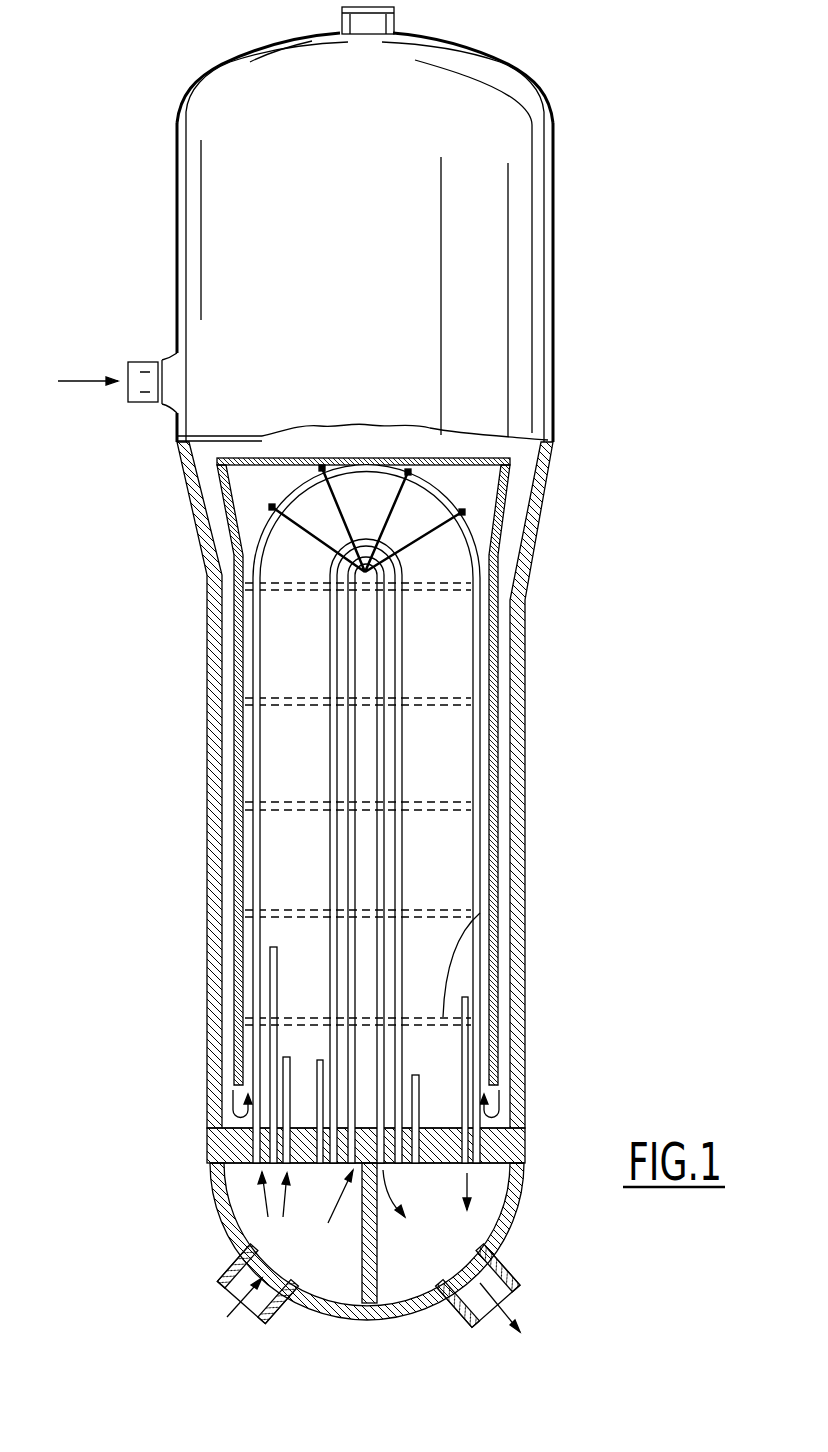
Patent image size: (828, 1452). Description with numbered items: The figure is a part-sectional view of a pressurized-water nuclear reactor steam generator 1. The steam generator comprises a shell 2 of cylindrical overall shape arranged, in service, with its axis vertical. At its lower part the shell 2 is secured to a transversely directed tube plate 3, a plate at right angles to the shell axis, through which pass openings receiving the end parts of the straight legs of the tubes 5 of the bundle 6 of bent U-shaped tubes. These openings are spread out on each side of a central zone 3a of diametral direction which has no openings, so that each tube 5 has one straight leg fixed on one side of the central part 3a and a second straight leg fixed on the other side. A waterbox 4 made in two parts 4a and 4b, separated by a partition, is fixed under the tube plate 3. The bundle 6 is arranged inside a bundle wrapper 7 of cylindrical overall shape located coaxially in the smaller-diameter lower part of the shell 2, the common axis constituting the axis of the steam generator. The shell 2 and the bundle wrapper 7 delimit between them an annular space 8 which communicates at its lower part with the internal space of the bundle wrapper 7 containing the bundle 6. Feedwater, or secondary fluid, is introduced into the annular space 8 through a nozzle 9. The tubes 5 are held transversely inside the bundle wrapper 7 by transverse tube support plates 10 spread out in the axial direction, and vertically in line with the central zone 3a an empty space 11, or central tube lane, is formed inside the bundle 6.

The steam generator 1 is at (349, 669).
The shell 2 is at (208, 722).
The tube plate 3 is at (512, 1148).
The central zone of the tube plate 3a is at (363, 1130).
The waterbox 4 is at (230, 1240).
The first part of the waterbox 4a is at (342, 1244).
The second part of the waterbox 4b is at (454, 1244).
The tubes 5 is at (257, 835).
The bundle 6 is at (478, 547).
The bundle wrapper 7 is at (240, 745).
The annular space 8 is at (228, 663).
The nozzle 9 is at (140, 388).
The tube support plates 10 is at (447, 910).
The empty space 11 is at (365, 1087).